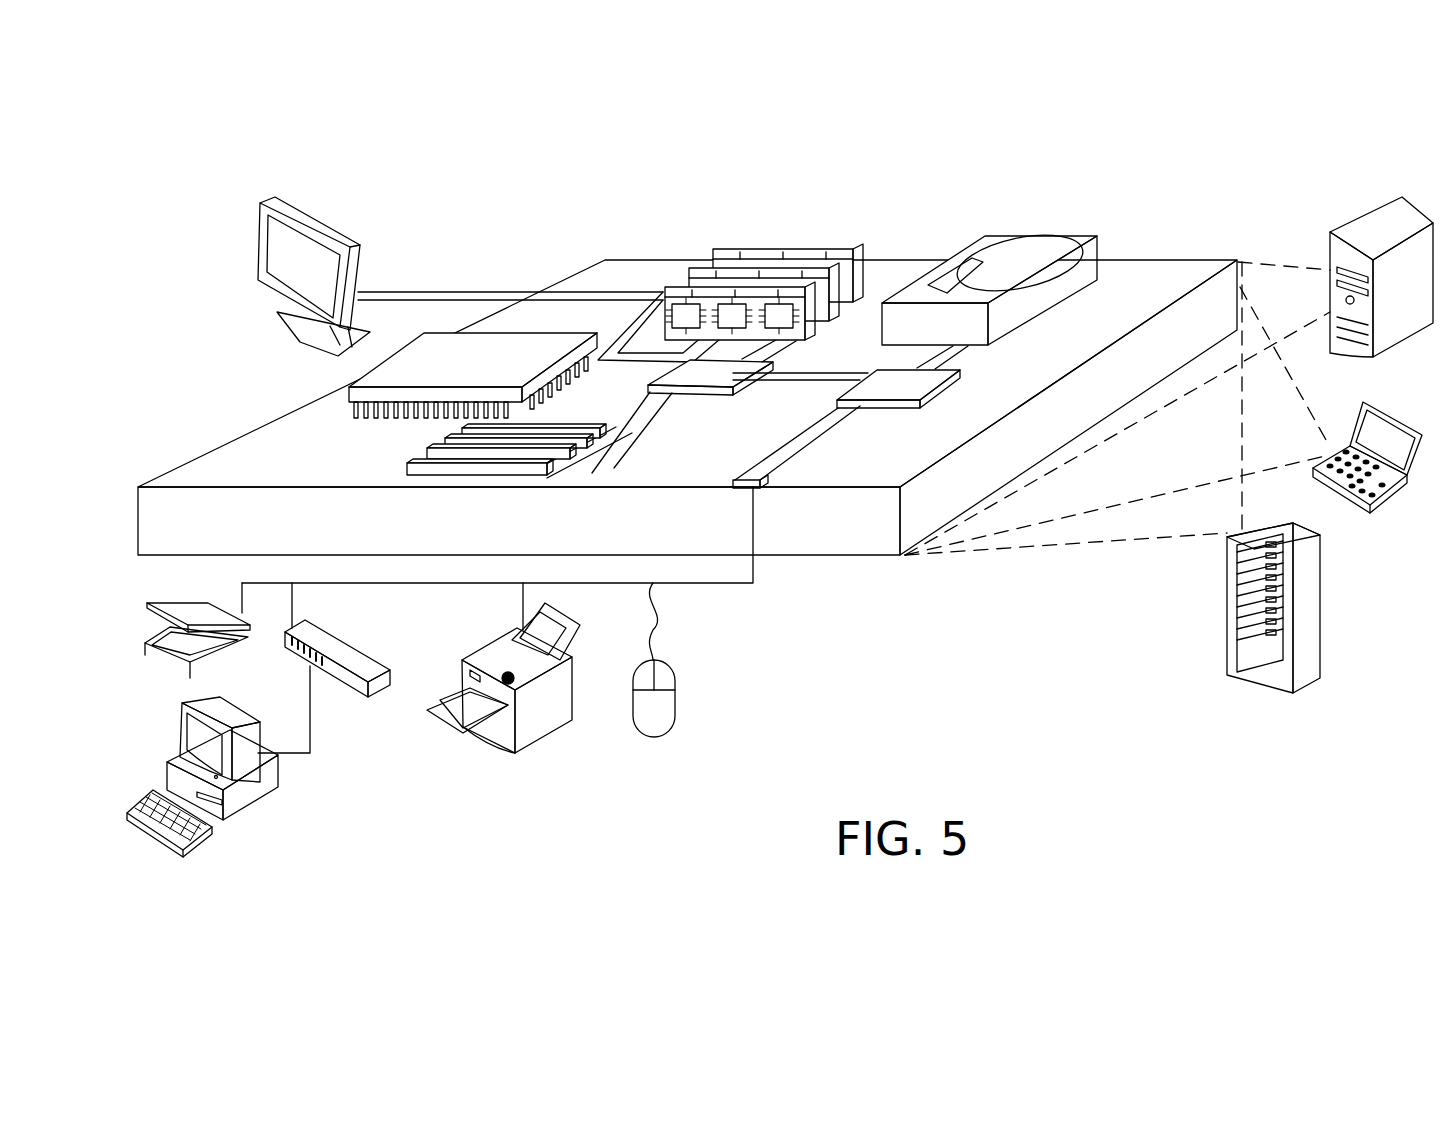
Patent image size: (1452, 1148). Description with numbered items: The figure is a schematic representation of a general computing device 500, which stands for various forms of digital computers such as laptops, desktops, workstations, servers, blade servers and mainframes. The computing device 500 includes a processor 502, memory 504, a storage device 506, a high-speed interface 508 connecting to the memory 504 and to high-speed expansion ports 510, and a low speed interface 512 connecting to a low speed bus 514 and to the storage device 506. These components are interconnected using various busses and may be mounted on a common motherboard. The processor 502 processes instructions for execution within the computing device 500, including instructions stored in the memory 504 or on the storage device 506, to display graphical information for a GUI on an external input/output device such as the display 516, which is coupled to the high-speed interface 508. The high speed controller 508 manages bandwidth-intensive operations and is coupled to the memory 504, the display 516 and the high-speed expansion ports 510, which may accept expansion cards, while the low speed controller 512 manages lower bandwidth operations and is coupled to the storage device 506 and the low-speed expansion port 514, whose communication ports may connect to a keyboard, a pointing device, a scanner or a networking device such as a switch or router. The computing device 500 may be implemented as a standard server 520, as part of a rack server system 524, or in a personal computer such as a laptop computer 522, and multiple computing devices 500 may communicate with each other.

The computing device 500 is at (444, 234).
The processor 502 is at (347, 400).
The memory 504 is at (740, 248).
The storage device 506 is at (984, 234).
The high-speed interface 508 is at (691, 377).
The high-speed expansion ports 510 is at (407, 463).
The low speed interface 512 is at (873, 370).
The low speed bus 514 is at (763, 485).
The display 516 is at (258, 217).
The standard server 520 is at (1352, 218).
The laptop computer 522 is at (1378, 503).
The rack server system 524 is at (1220, 593).